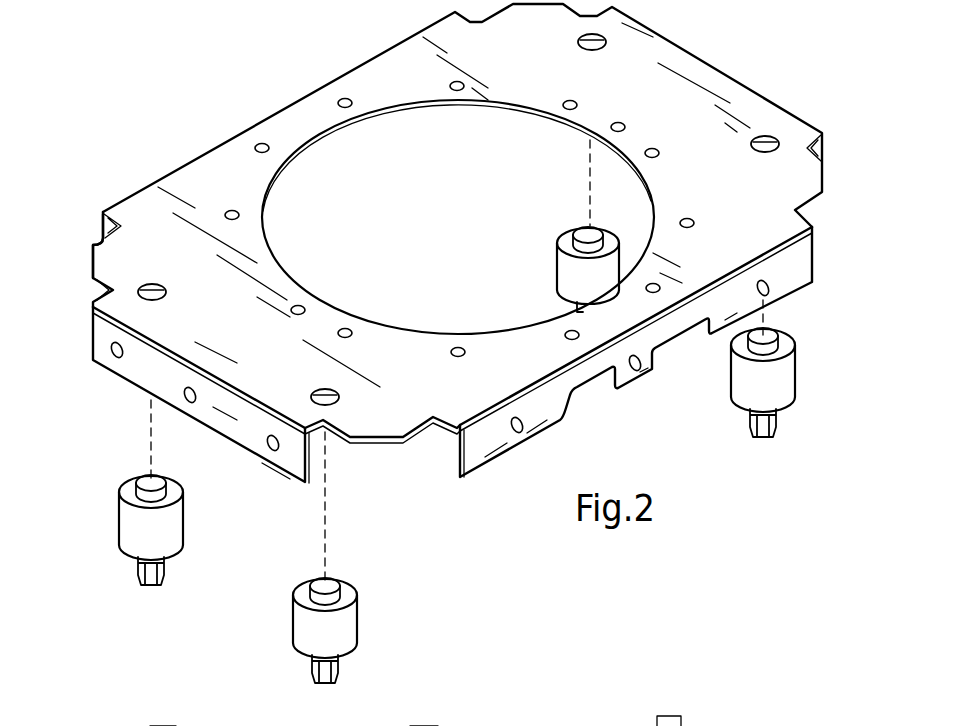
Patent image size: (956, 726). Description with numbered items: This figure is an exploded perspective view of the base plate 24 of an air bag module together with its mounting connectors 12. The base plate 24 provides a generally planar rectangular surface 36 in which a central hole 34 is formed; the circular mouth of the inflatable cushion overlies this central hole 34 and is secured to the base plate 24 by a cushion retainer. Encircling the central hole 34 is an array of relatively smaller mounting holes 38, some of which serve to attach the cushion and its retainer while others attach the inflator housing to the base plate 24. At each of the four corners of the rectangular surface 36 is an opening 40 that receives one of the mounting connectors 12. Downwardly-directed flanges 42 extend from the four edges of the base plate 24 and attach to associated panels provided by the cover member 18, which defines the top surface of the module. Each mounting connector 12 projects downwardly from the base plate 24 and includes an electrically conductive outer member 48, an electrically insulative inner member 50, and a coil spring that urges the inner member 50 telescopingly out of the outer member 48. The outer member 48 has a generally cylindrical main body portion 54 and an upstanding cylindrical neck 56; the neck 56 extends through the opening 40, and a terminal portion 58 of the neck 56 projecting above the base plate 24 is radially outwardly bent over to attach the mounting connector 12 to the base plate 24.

The mounting connector 12 is at (465, 445).
The cover member 18 is at (423, 713).
The base plate 24 is at (182, 128).
The central hole 34 is at (377, 187).
The rectangular surface 36 is at (172, 243).
The mounting holes 38 is at (568, 108).
The opening 40 is at (768, 136).
The flanges 42 is at (290, 462).
The outer member 48 is at (558, 232).
The inner member 50 is at (768, 432).
The main body portion 54 is at (570, 280).
The cylindrical neck 56 is at (604, 228).
The terminal portion 58 is at (162, 713).